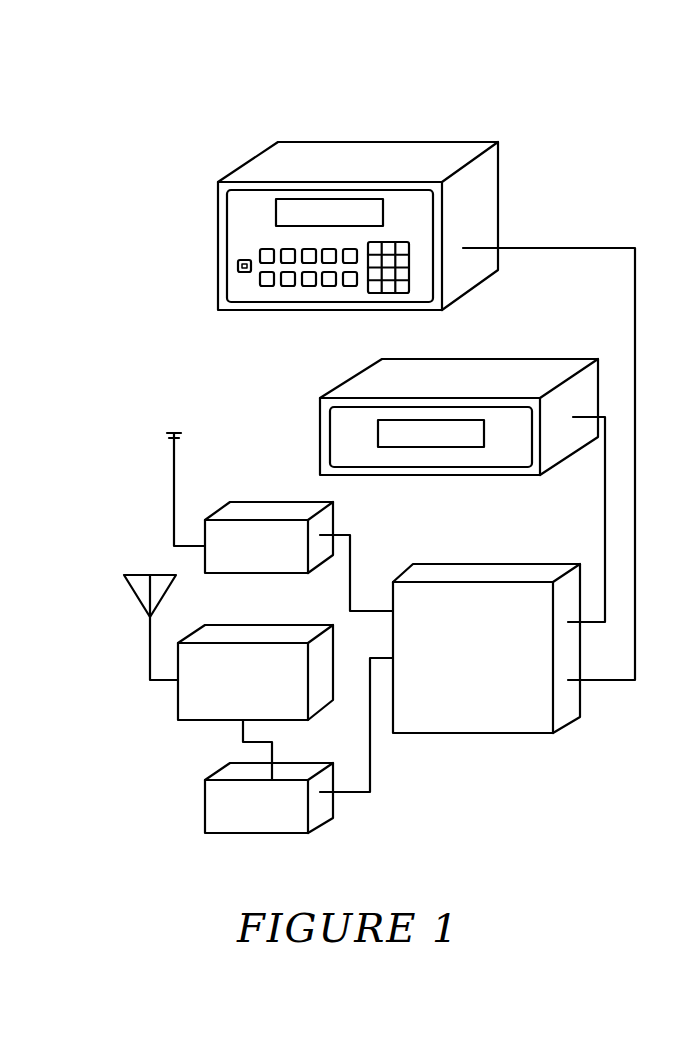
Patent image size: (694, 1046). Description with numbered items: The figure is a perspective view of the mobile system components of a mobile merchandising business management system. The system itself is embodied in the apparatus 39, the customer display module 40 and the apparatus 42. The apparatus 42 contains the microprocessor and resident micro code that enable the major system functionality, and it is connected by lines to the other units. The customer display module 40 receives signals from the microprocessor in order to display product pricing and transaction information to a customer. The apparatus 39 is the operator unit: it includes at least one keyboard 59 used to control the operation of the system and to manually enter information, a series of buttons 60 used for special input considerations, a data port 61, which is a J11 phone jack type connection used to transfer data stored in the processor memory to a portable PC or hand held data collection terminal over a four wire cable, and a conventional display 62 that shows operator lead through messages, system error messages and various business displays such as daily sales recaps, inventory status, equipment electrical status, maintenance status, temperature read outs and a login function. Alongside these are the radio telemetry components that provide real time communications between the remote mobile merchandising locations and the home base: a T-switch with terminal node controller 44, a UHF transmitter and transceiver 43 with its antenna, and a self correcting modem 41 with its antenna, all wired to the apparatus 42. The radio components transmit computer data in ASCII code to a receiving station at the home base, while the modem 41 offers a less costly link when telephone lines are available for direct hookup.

The apparatus 39 is at (498, 142).
The customer display module 40 is at (472, 359).
The 4800 baud self correcting modem 41 is at (205, 562).
The apparatus 42 is at (470, 733).
The UHF transmitter and transceiver 43 is at (178, 715).
The T-switch with terminal node controller 44 is at (205, 818).
The keyboard 59 is at (410, 275).
The series of buttons 60 is at (259, 278).
The data port 61 is at (238, 265).
The display 62 is at (316, 207).